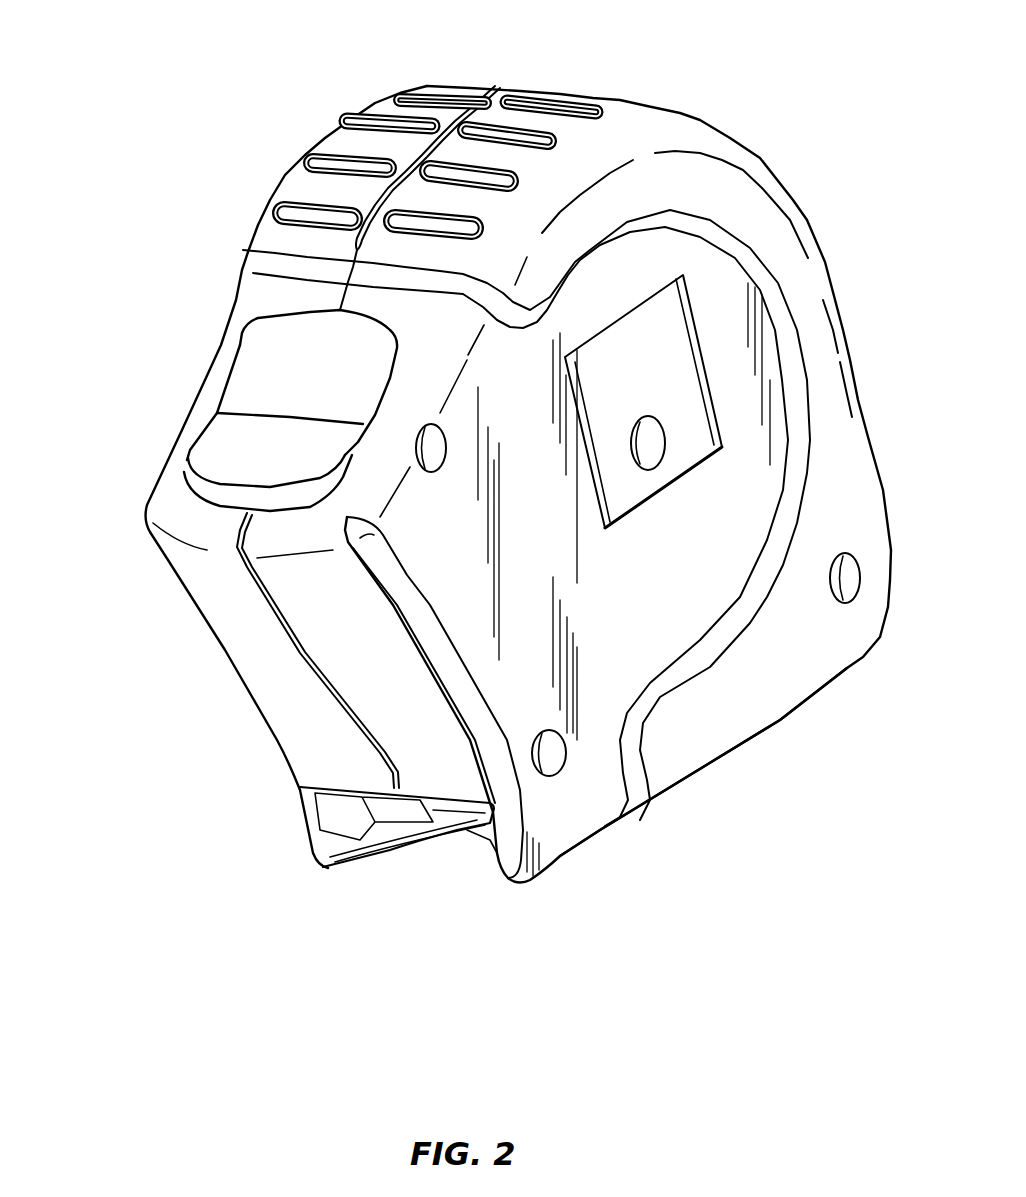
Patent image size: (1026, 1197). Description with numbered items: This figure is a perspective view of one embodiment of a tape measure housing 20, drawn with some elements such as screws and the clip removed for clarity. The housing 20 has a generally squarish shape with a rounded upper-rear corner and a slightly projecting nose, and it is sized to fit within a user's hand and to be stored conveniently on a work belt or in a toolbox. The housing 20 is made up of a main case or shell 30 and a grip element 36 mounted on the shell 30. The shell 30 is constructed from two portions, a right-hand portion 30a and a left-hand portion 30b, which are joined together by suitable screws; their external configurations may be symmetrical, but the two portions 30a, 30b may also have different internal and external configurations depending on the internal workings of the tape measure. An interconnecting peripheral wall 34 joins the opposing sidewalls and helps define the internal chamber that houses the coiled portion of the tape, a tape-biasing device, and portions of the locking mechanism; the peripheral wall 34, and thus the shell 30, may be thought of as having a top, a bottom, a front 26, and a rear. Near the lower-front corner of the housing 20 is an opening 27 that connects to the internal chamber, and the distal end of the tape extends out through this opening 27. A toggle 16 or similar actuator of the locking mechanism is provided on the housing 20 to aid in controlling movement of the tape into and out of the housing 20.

The housing 20 is at (127, 88).
The grip element 36 is at (678, 137).
The peripheral wall 34 is at (262, 298).
The toggle 16 is at (220, 457).
The shell 30 is at (233, 627).
The front 26 is at (392, 677).
The right-hand portion 30a is at (550, 800).
The left-hand portion 30b is at (303, 764).
The opening 27 is at (417, 867).